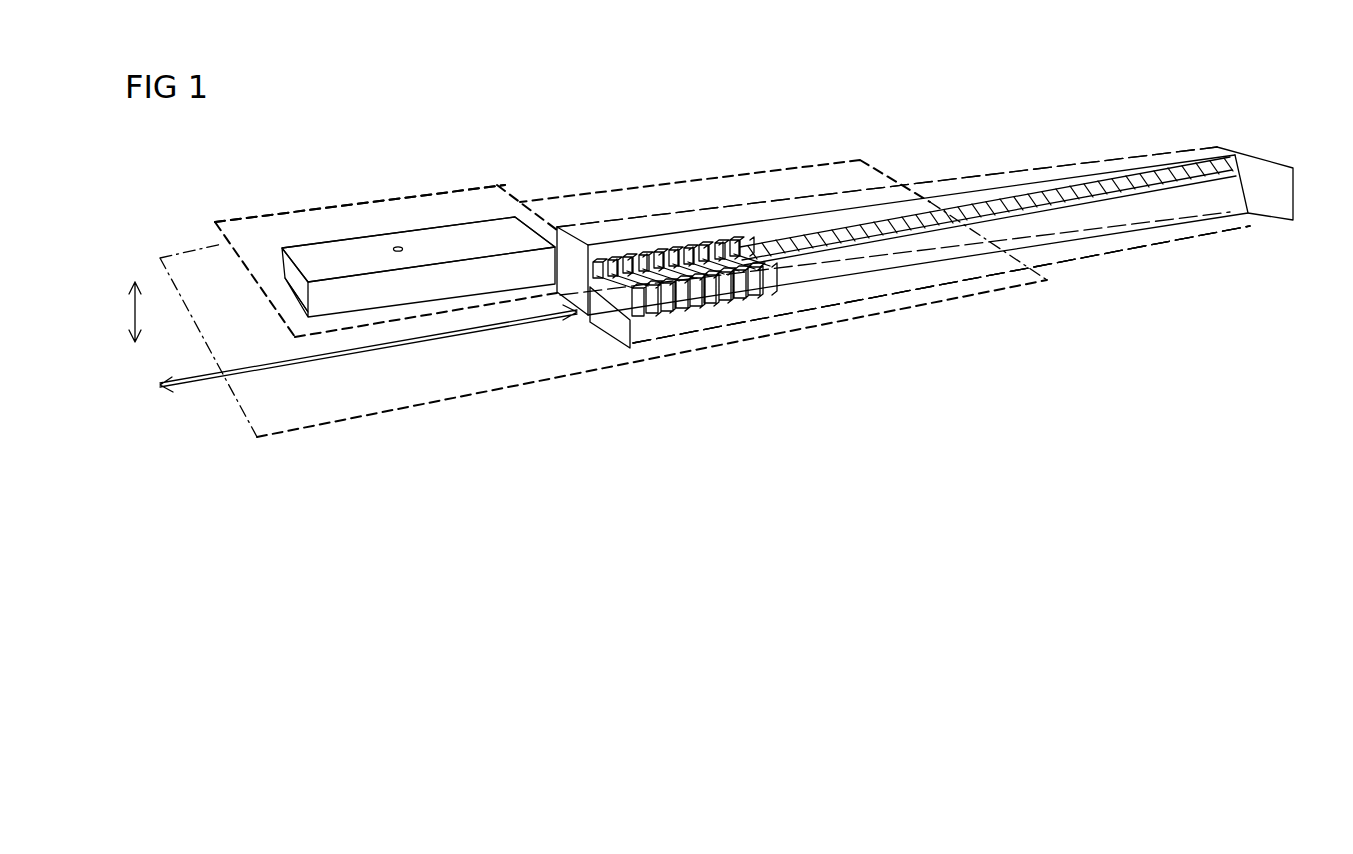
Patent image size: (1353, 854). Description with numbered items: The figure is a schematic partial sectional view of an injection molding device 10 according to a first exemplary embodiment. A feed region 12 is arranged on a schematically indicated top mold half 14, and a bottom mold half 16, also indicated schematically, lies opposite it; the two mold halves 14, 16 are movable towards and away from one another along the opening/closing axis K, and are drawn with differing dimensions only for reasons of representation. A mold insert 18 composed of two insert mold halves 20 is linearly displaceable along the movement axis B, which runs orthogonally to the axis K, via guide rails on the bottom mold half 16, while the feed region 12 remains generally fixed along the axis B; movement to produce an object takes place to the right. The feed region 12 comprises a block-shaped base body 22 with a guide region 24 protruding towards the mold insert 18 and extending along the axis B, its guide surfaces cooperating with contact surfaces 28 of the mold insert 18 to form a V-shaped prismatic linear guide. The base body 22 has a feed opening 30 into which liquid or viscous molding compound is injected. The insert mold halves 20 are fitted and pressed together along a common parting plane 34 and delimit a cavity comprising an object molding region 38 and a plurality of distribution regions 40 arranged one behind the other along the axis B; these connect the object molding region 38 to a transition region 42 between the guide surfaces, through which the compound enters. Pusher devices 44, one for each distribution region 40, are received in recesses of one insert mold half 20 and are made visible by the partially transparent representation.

The device 10 is at (222, 206).
The feed region 12 is at (323, 303).
The top mold half 14 is at (296, 210).
The bottom mold half 16 is at (474, 397).
The mold insert 18 is at (1107, 243).
The insert mold half 20 is at (1173, 140).
The base body 22 is at (485, 236).
The guide region 24 is at (297, 307).
The contact surface 28 is at (1032, 170).
The feed opening 30 is at (398, 245).
The parting plane 34 is at (588, 322).
The object molding region 38 is at (828, 300).
The distribution region 40 is at (857, 225).
The transition region 42 is at (1237, 156).
The pusher device 44 is at (655, 335).
The movement axis B is at (390, 347).
The opening/closing axis K is at (140, 310).